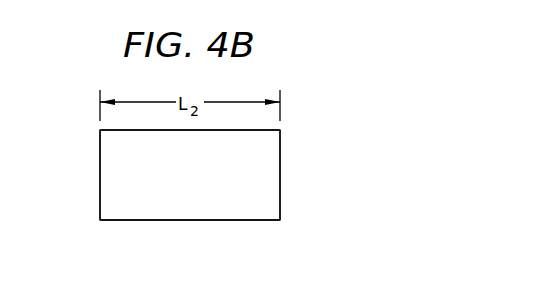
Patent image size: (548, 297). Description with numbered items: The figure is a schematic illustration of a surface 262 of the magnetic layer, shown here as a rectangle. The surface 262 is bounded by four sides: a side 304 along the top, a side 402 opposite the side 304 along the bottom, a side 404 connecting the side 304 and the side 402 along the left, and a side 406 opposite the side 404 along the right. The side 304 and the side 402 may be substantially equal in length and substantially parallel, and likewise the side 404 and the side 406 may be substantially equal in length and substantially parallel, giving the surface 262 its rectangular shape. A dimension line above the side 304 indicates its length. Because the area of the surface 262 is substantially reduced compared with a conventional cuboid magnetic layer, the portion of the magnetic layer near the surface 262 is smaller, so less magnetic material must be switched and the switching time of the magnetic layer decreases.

The surface 262 is at (173, 191).
The side 304 is at (260, 130).
The side 402 is at (232, 221).
The side 404 is at (100, 168).
The side 406 is at (280, 170).